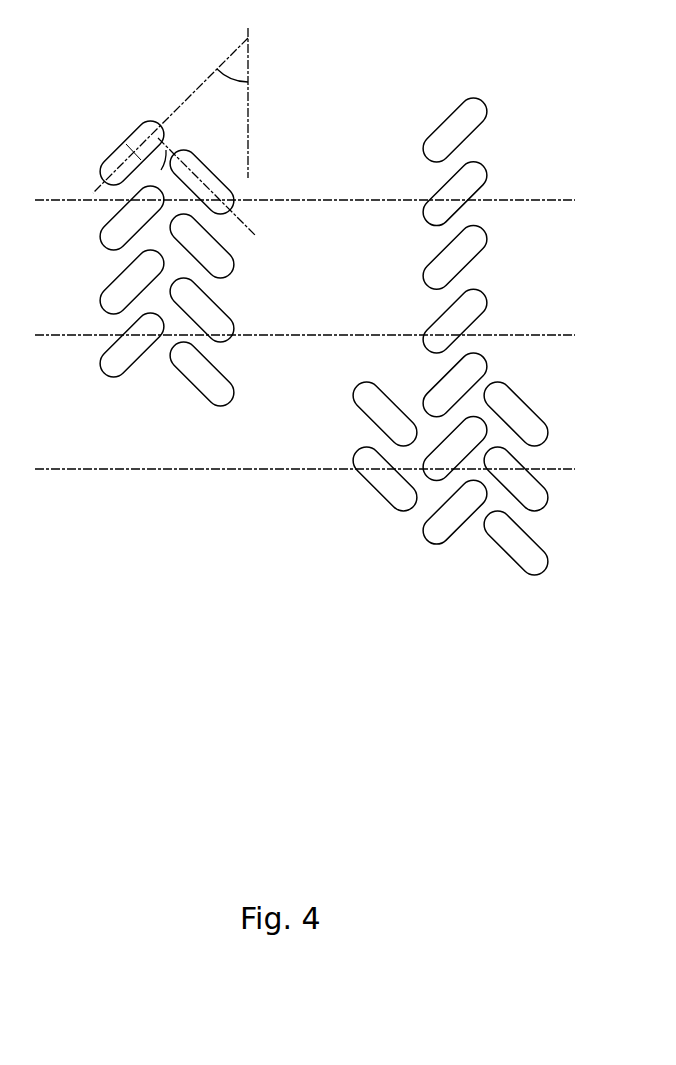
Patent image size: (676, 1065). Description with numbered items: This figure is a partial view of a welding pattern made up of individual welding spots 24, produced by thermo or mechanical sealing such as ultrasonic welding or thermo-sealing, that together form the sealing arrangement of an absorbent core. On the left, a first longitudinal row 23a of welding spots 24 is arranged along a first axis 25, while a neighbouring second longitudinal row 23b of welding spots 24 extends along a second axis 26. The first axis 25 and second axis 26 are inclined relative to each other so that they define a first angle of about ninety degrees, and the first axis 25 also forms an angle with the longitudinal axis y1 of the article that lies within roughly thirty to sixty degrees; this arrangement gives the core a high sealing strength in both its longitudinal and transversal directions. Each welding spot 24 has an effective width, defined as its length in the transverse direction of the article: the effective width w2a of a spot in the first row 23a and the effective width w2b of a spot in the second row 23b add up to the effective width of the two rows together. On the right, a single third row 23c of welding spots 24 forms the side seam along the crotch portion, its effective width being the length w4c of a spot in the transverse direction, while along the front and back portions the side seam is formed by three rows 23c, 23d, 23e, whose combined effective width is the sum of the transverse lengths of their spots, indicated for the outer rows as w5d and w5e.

The first longitudinal row 23a is at (137, 109).
The second longitudinal row 23b is at (201, 153).
The third row 23c is at (432, 111).
The row of welding spots 23d is at (393, 577).
The row of welding spots 23e is at (494, 588).
The welding spot 24 is at (113, 373).
The first axis 25 is at (92, 192).
The second axis 26 is at (256, 237).
The longitudinal axis y1 is at (250, 127).
The effective width of a welding spot in the first row w2a is at (143, 203).
The effective width of a welding spot in the second row w2b is at (230, 192).
The effective width of the third row w4c is at (427, 205).
The slot width w5d is at (372, 463).
The slot width w5e is at (513, 462).